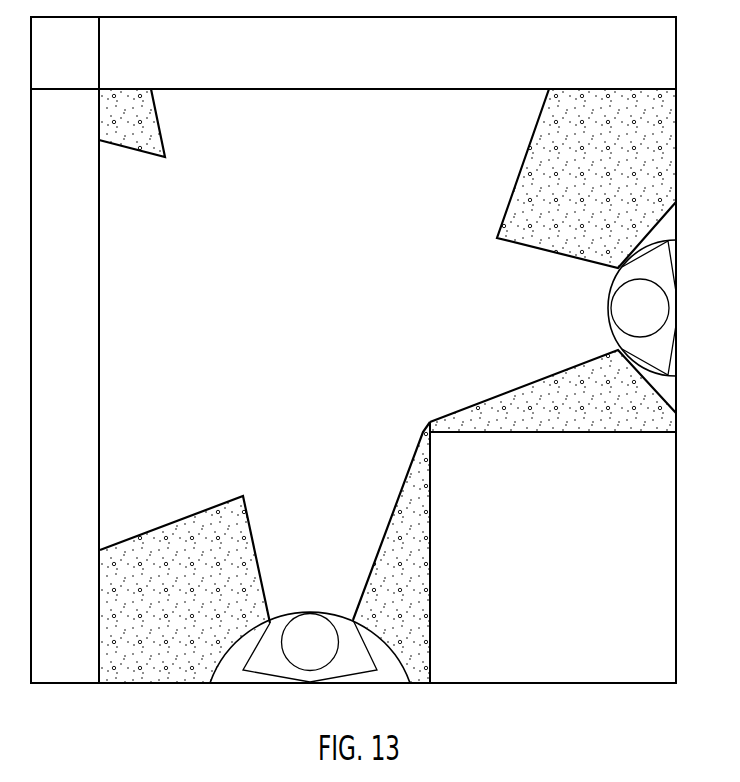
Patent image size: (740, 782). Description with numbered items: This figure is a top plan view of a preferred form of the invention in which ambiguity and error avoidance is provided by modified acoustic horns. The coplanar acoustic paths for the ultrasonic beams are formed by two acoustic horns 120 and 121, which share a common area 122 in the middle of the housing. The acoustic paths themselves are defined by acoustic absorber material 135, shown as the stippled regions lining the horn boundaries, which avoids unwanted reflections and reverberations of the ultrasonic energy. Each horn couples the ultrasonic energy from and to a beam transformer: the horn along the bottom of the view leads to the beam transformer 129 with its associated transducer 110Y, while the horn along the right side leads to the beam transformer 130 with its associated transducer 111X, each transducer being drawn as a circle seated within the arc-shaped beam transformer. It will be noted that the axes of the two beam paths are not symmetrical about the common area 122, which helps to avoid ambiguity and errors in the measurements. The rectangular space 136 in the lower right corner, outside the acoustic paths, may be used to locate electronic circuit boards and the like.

The acoustic horn 120 is at (152, 307).
The acoustic horn 121 is at (350, 141).
The common area 122 is at (333, 303).
The beam transformer 129 is at (272, 643).
The beam transformer 130 is at (643, 344).
The acoustic absorber material 135 is at (147, 135).
The space 136 is at (567, 573).
The optical fiber Y 110Y is at (313, 630).
The optical fiber X 111X is at (629, 298).